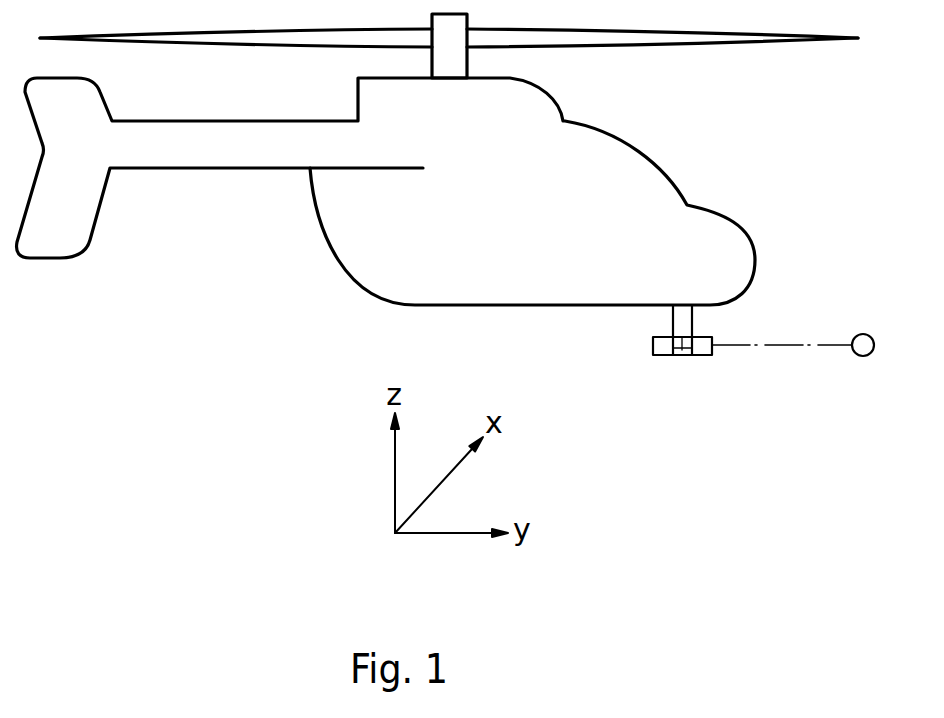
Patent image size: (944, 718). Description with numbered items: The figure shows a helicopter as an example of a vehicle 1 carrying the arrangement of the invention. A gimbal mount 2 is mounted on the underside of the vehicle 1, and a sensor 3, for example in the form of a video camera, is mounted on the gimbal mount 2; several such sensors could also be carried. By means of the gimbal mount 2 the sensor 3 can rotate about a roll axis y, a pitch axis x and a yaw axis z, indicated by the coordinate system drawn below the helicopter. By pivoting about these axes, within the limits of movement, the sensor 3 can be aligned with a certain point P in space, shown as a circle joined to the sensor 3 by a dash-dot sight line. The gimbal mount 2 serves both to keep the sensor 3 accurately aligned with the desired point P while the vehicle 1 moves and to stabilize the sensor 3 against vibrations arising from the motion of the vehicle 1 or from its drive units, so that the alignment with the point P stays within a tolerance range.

The vehicle 1 is at (304, 279).
The gimbal mount 2 is at (685, 313).
The sensor 3 is at (703, 345).
The point in space P is at (855, 358).